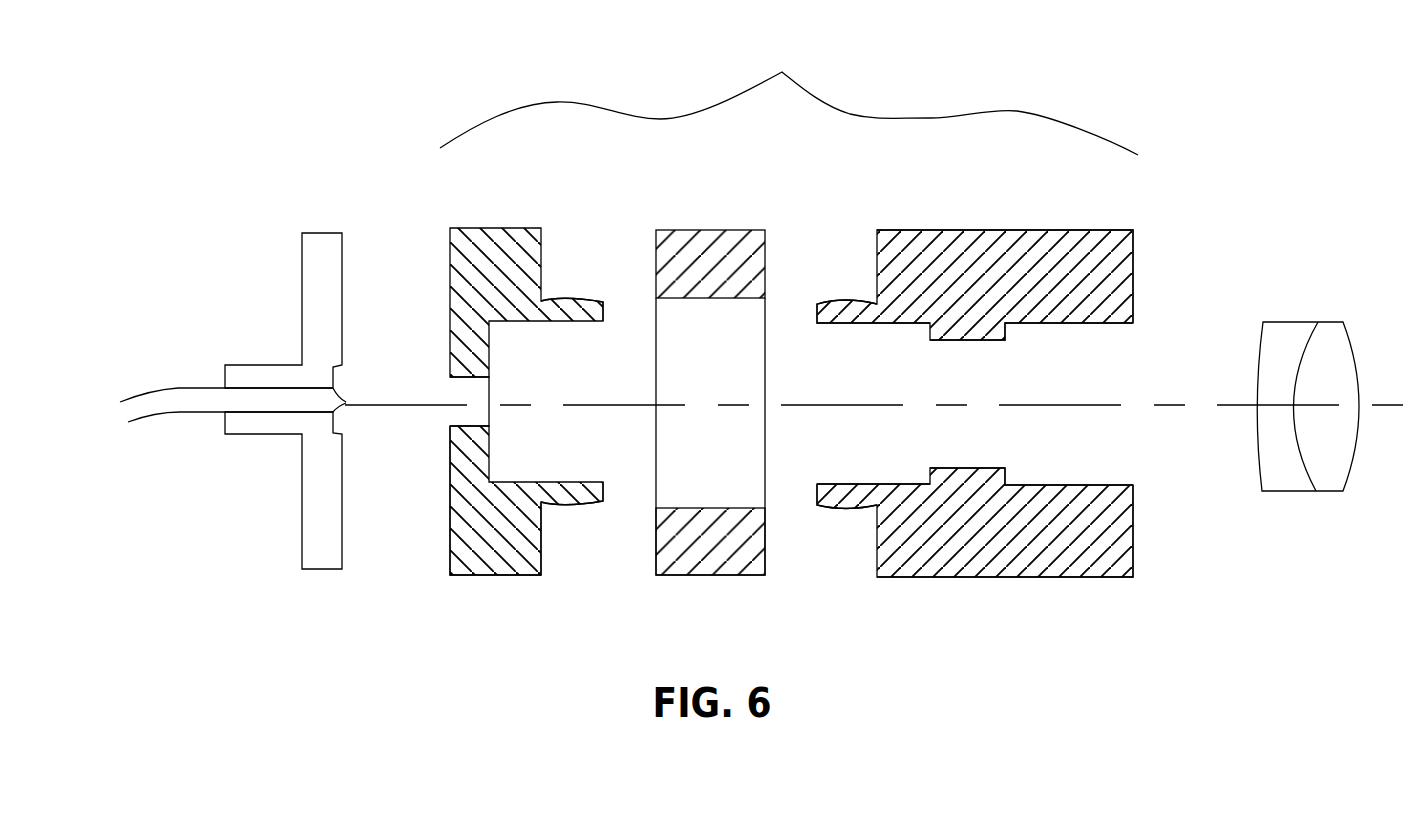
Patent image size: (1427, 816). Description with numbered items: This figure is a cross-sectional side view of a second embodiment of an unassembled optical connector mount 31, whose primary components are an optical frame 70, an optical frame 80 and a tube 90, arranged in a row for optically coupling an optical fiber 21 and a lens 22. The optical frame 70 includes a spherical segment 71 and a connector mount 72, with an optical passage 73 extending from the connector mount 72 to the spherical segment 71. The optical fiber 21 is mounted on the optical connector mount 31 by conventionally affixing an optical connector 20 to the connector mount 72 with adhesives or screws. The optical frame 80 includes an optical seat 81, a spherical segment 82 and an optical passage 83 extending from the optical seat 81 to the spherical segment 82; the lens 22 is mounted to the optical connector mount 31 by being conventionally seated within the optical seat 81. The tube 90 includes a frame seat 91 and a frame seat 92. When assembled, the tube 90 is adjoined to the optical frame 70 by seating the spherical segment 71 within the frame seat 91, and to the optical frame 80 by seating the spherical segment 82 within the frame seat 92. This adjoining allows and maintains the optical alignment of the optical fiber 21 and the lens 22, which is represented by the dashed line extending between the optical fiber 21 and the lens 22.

The optical connector 20 is at (267, 401).
The optical fiber 21 is at (346, 403).
The lens 22 is at (1352, 353).
The optical connector mount 31 is at (789, 98).
The optical frame 70 is at (486, 379).
The spherical segment 71 is at (574, 492).
The connector mount 72 is at (461, 535).
The optical passage 73 is at (468, 392).
The optical frame 80 is at (1005, 370).
The optical seat 81 is at (1120, 295).
The spherical segment 82 is at (851, 505).
The optical passage 83 is at (990, 432).
The tube 90 is at (705, 399).
The frame seat 91 is at (661, 570).
The frame seat 92 is at (737, 556).